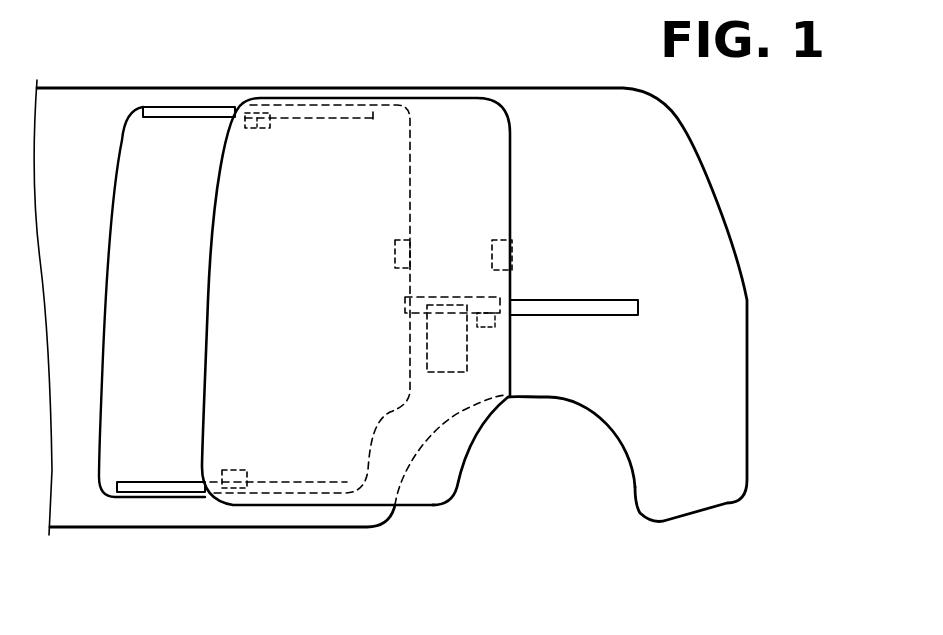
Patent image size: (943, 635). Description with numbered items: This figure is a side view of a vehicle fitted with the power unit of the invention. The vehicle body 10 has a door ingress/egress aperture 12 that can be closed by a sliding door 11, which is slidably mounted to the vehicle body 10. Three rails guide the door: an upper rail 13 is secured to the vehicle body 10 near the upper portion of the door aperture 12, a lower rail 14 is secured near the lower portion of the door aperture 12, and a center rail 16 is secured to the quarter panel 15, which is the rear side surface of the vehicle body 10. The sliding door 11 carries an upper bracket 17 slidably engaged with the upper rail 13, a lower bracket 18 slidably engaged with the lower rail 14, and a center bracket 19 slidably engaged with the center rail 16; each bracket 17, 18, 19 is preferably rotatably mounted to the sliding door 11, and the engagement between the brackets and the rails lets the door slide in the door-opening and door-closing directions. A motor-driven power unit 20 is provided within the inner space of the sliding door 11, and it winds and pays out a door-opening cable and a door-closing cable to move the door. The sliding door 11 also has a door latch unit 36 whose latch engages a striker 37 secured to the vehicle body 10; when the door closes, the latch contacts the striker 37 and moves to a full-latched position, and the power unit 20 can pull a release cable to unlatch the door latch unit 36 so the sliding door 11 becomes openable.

The vehicle body 10 is at (555, 88).
The sliding door 11 is at (447, 123).
The door ingress/egress aperture 12 is at (122, 138).
The upper rail 13 is at (190, 112).
The lower rail 14 is at (153, 487).
The quarter panel 15 is at (572, 370).
The center rail 16 is at (610, 305).
The upper bracket 17 is at (262, 130).
The lower bracket 18 is at (232, 470).
The center bracket 19 is at (480, 320).
The power unit 20 is at (442, 365).
The door latch unit 36 is at (500, 255).
The striker 37 is at (400, 247).